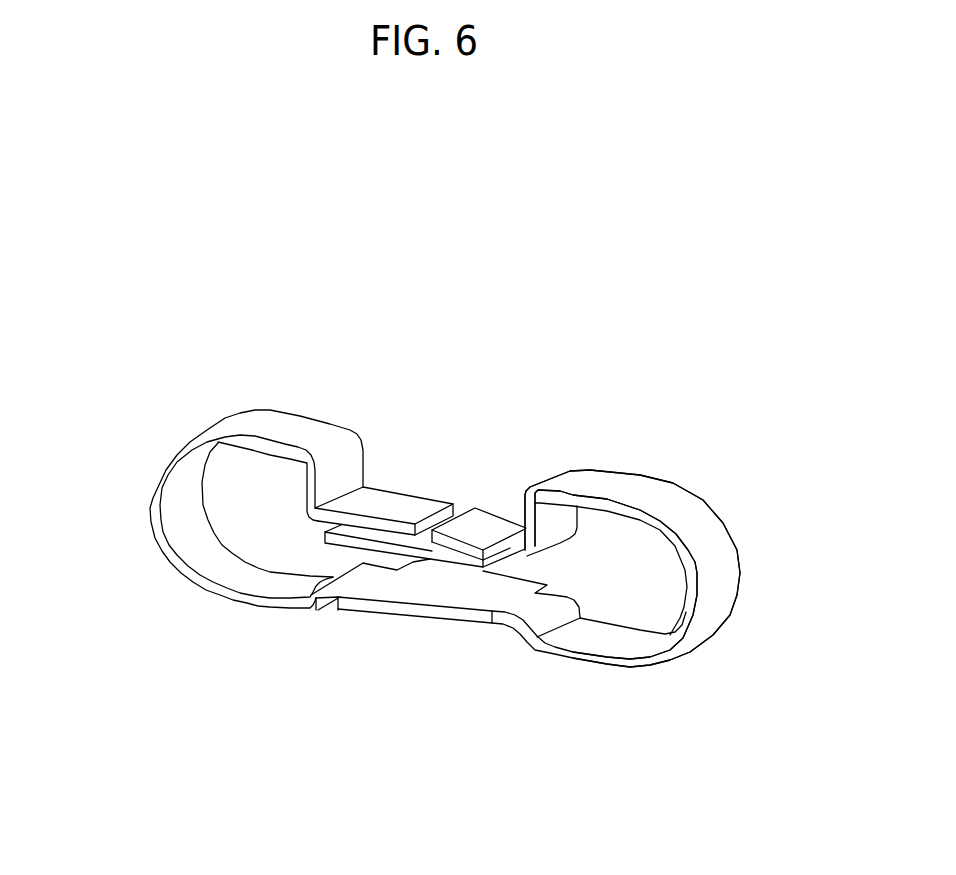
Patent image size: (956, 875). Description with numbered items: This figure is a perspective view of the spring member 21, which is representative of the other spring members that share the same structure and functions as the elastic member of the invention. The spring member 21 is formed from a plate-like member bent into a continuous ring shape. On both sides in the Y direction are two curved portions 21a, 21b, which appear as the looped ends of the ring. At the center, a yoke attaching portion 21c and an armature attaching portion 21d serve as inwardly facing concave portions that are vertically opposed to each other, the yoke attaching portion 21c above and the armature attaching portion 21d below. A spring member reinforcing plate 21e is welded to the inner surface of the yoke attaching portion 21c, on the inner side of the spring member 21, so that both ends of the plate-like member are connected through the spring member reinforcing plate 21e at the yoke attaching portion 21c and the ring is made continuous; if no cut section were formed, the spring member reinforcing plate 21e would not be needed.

The spring member 21 is at (492, 298).
The curved portion 21a is at (153, 527).
The curved portion 21b is at (712, 573).
The yoke attaching portion 21c is at (414, 512).
The armature attaching portion 21d is at (404, 620).
The spring member reinforcing plate 21e is at (483, 551).